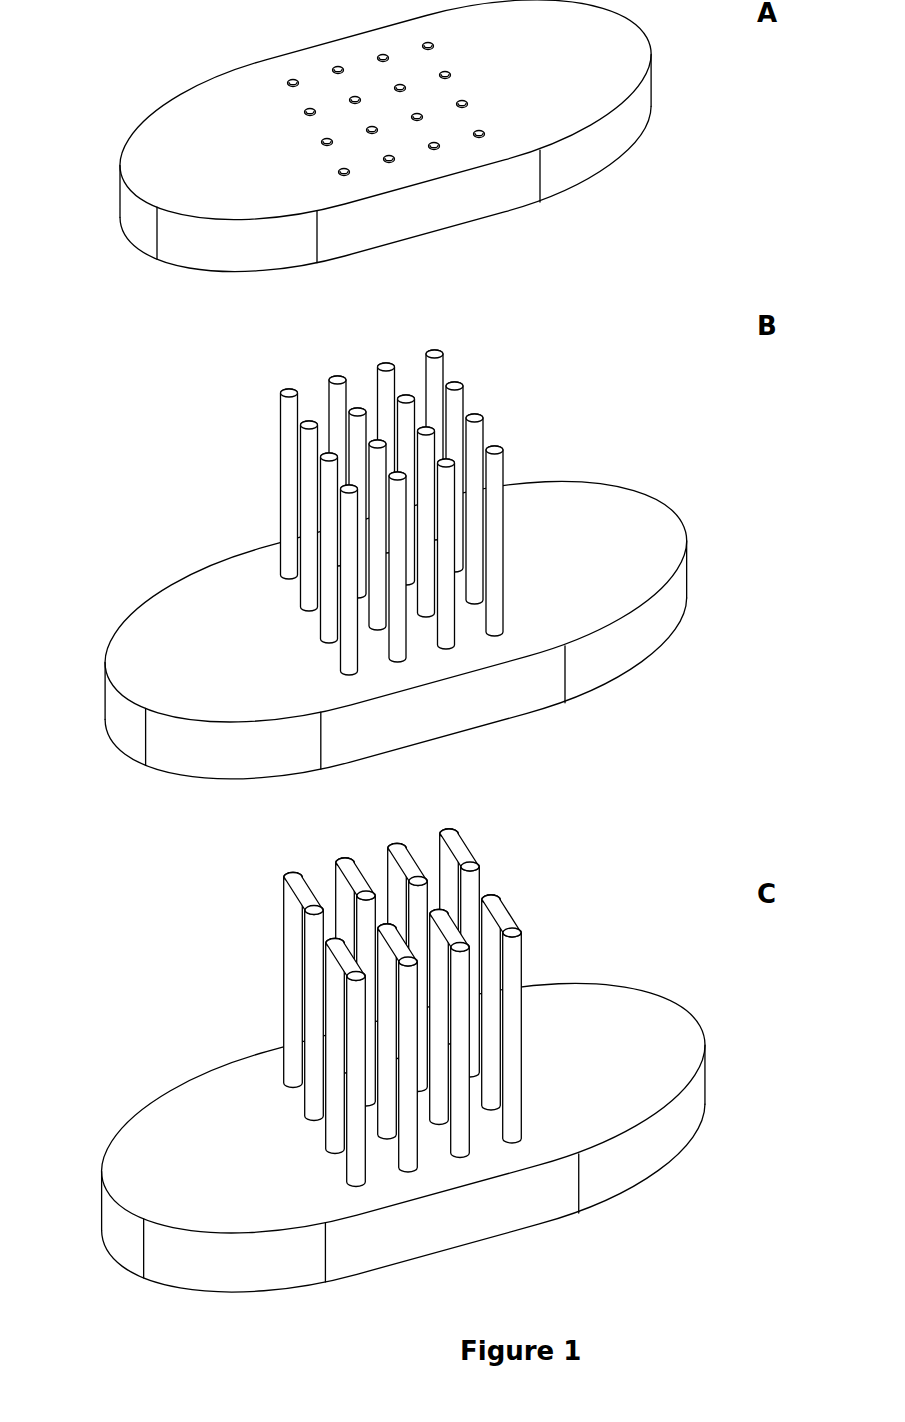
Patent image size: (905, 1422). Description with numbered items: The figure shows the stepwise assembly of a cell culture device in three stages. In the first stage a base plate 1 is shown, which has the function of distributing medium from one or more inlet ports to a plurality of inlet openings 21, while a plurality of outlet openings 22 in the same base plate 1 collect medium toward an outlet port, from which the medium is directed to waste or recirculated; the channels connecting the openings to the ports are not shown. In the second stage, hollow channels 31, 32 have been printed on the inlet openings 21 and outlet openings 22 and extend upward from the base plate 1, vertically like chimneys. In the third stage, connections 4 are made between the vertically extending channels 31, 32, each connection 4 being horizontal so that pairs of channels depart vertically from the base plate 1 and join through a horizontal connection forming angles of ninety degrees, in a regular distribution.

The base plate 1 is at (403, 646).
The inlet openings 21 is at (380, 92).
The outlet openings 22 is at (392, 122).
The channel 31 is at (572, 950).
The channel 32 is at (590, 993).
The connection 4 is at (585, 893).